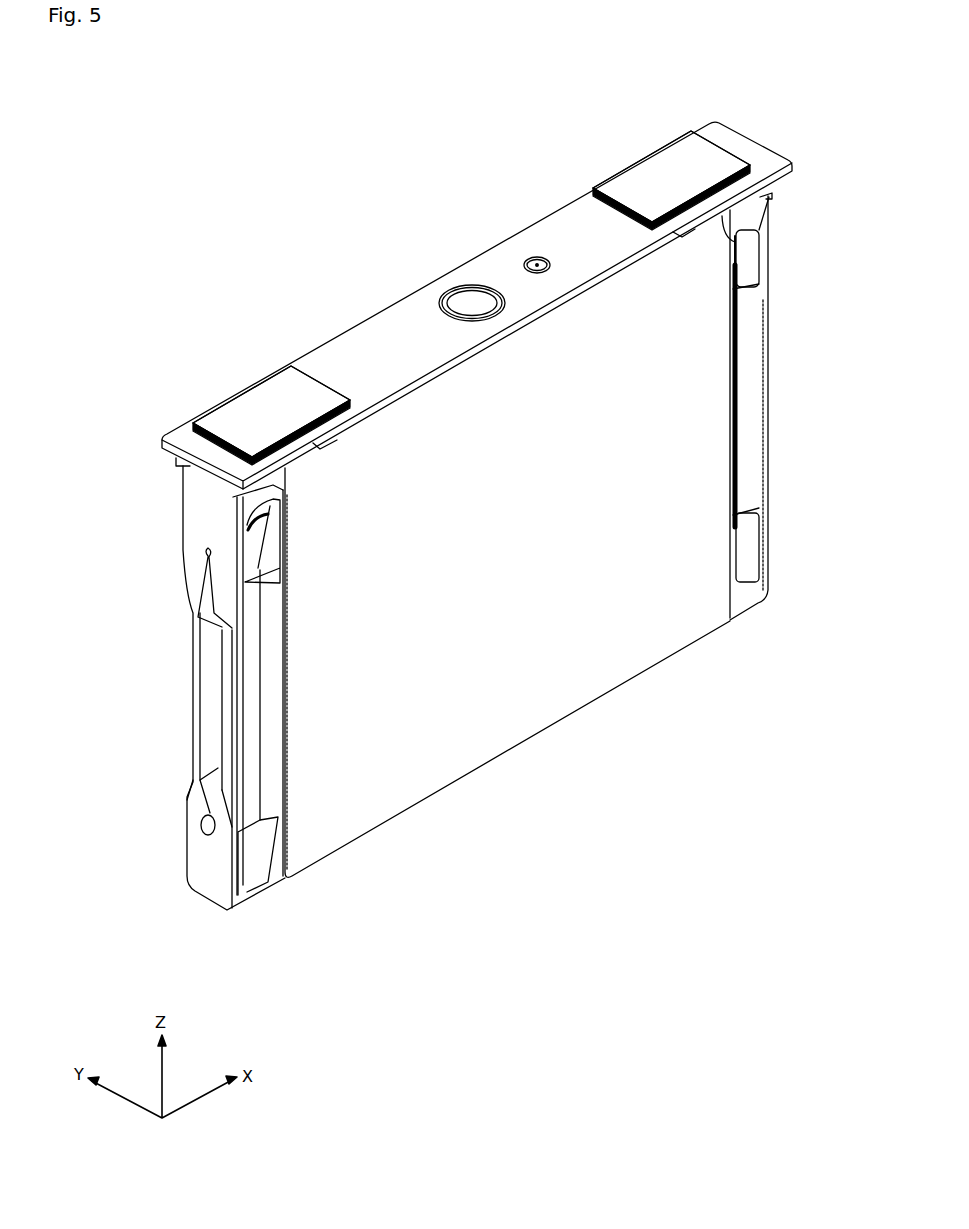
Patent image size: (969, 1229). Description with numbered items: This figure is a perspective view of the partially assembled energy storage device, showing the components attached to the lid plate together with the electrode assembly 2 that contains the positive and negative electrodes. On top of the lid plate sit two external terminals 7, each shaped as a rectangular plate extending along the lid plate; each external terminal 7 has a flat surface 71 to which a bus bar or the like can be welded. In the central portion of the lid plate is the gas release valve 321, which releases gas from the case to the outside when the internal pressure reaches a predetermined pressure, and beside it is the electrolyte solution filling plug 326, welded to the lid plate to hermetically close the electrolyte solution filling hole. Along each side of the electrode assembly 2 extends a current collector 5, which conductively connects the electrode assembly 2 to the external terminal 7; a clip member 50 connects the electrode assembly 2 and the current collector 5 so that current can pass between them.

The electrode assembly 2 is at (548, 724).
The current collector 5 is at (178, 515).
The clip member 50 is at (250, 732).
The external terminal 7 is at (230, 399).
The surface 71 is at (278, 395).
The gas release valve 321 is at (450, 290).
The electrolyte solution filling plug 326 is at (527, 260).